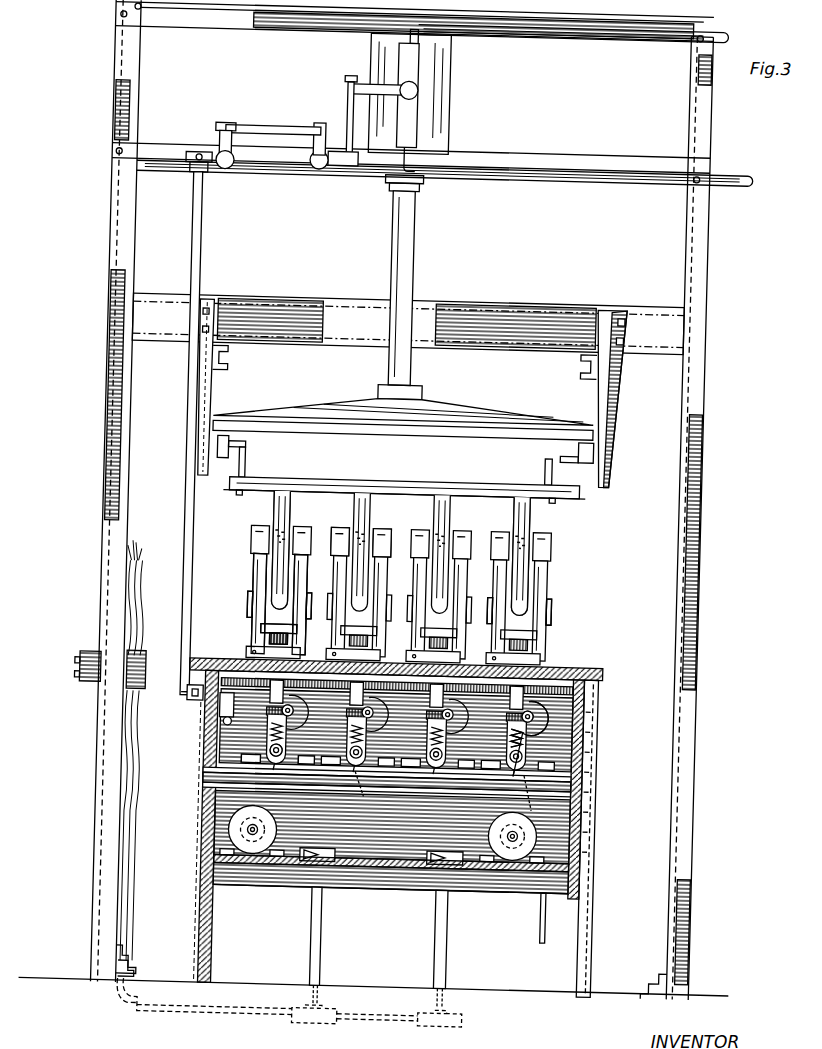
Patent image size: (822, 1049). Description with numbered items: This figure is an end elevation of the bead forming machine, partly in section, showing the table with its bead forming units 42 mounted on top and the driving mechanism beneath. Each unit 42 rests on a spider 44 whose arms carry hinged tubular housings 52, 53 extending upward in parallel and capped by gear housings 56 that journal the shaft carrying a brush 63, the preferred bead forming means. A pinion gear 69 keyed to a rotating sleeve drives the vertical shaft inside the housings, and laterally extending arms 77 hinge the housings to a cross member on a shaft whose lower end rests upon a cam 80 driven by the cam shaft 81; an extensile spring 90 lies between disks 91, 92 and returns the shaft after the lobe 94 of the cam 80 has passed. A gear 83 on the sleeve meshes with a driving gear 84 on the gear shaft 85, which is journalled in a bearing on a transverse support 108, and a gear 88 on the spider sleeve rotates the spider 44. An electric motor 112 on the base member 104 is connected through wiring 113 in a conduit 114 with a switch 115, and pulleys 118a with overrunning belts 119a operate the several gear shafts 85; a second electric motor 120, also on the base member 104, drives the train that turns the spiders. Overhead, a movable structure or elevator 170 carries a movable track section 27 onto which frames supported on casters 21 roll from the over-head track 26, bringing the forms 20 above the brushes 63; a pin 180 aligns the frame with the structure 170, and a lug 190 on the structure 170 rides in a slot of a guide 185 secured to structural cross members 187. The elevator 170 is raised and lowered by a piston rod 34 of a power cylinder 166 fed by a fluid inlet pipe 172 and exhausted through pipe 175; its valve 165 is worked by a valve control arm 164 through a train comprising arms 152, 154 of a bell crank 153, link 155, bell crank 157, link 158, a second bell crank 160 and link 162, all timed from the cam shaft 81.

The forms 20 is at (541, 511).
The casters 21 is at (247, 436).
The over-head track 26 is at (238, 360).
The movable track section 27 is at (599, 418).
The piston rod 34 is at (400, 242).
The bead forming units 42 is at (405, 577).
The spider 44 is at (256, 648).
The tubular housing 52 is at (311, 567).
The tubular housing 53 is at (273, 546).
The gear housings 56 is at (355, 524).
The brush 63 is at (285, 524).
The pinion gear 69 is at (278, 638).
The arms 77 is at (258, 605).
The cam 80 is at (306, 760).
The cam shaft 81 is at (381, 760).
The gear 83 is at (262, 739).
The driving gear 84 is at (566, 745).
The gear shaft 85 is at (386, 791).
The gear 88 is at (218, 650).
The extensile spring 90 is at (266, 759).
The disk 91 is at (525, 725).
The disk 92 is at (547, 764).
The lobe 94 is at (392, 827).
The base member 104 is at (567, 859).
The support 108 is at (581, 769).
The electric motor 112 is at (160, 542).
The wiring 113 is at (318, 857).
The conduit 114 is at (167, 822).
The switch 115 is at (106, 683).
The pulleys 118a is at (554, 671).
The overrunning belts 119a is at (533, 647).
The second electric motor 120 is at (558, 824).
The arm 152 is at (250, 719).
The bell crank 153 is at (207, 703).
The arm 154 is at (209, 688).
The link 155 is at (194, 477).
The bell crank 157 is at (200, 170).
The link 158 is at (255, 122).
The second bell crank 160 is at (326, 162).
The link 162 is at (348, 100).
The valve control arm 164 is at (388, 78).
The valve 165 is at (415, 80).
The power cylinder 166 is at (438, 120).
The overhead structure 170 is at (477, 403).
The fluid inlet pipe 172 is at (545, 162).
The pipe 175 is at (640, 20).
The pin 180 is at (553, 449).
The guide 185 is at (216, 393).
The structural cross members 187 is at (569, 307).
The lug 190 is at (608, 451).